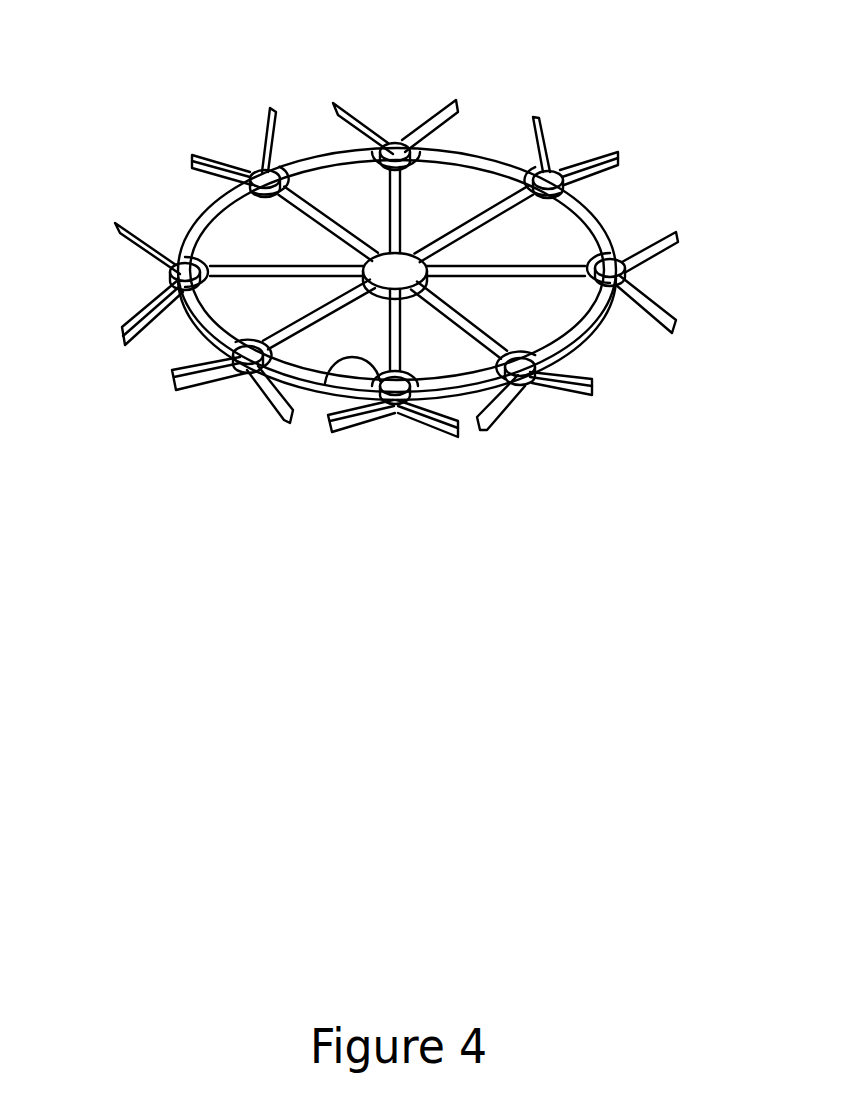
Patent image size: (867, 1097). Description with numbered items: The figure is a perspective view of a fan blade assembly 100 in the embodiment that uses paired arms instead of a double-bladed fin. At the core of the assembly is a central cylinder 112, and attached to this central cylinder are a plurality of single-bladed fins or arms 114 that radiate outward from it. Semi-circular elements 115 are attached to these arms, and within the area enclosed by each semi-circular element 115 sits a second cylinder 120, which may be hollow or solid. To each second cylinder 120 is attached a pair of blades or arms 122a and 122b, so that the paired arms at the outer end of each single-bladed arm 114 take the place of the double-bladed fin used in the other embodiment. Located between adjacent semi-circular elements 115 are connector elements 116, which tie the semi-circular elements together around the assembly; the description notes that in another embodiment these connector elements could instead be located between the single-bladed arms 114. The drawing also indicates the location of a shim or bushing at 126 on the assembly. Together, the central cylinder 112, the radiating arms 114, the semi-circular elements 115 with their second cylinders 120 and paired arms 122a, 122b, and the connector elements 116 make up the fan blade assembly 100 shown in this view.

The fan blade assembly 100 is at (185, 17).
The central cylinder 112 is at (390, 265).
The single-bladed fin or arm 114 is at (498, 225).
The semi-circular element 115 is at (596, 263).
The connector element 116 is at (594, 341).
The second cylinder 120 is at (522, 371).
The blade or arm 122a is at (357, 425).
The blade or arm 122b is at (435, 427).
The shim or bushing location 126 is at (333, 366).